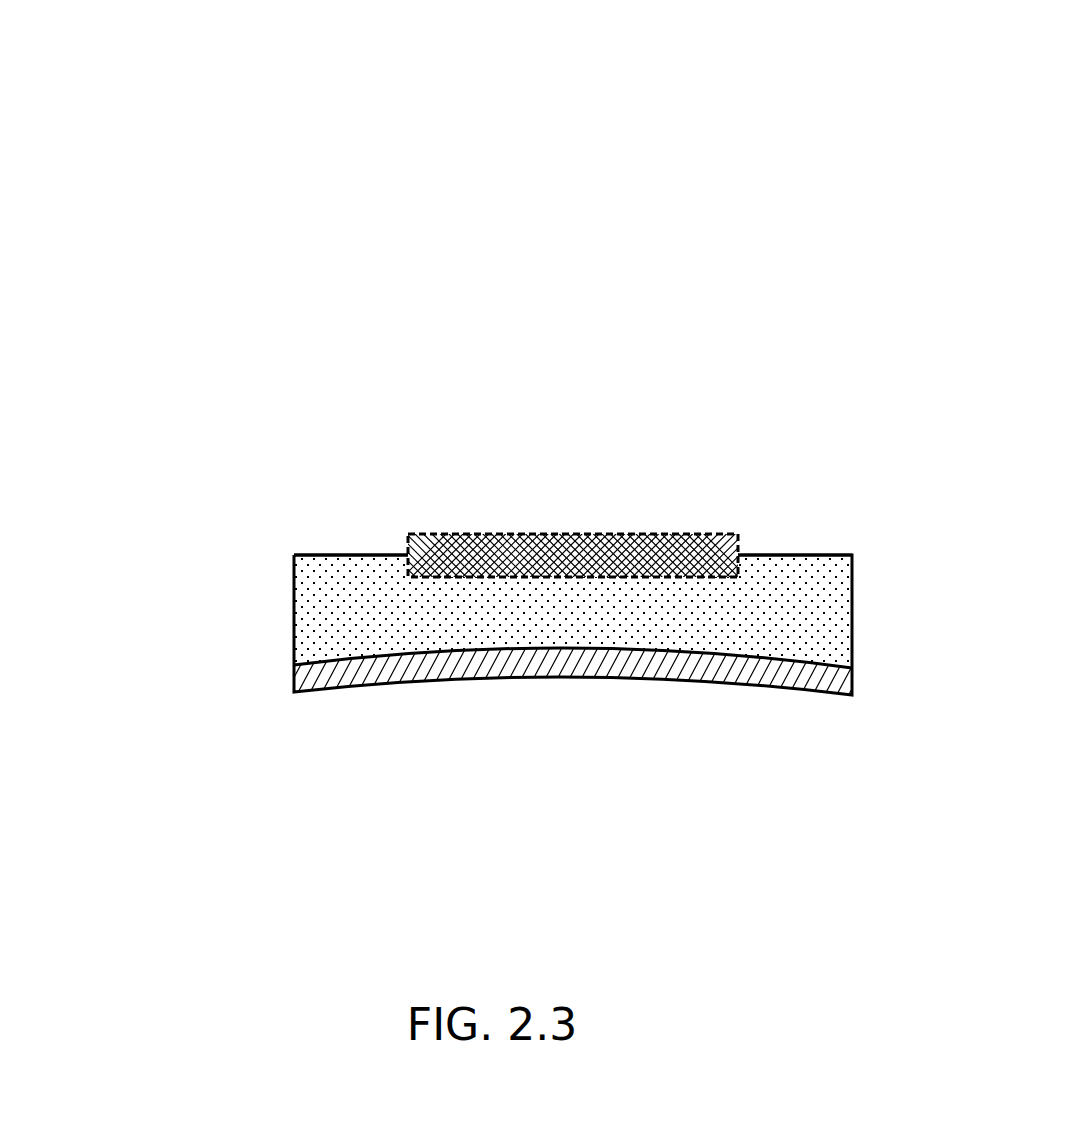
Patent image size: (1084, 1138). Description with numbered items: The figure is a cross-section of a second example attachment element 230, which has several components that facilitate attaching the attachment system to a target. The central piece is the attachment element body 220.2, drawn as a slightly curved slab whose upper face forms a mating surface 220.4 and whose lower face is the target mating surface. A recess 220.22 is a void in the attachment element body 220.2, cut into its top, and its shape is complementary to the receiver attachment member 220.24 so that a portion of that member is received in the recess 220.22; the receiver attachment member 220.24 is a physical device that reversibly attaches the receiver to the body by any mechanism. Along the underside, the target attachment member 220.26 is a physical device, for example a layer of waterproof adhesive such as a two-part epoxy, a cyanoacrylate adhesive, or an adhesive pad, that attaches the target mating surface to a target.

The second example attachment element 230 is at (500, 473).
The attachment element body 220.2 is at (506, 593).
The target mating surface 220.4 is at (626, 411).
The recess 220.22 is at (376, 528).
The receiver attachment member 220.24 is at (772, 115).
The target attachment member 220.26 is at (680, 681).